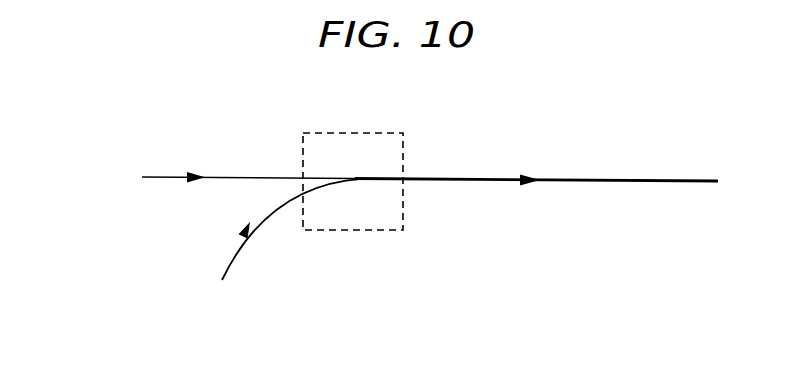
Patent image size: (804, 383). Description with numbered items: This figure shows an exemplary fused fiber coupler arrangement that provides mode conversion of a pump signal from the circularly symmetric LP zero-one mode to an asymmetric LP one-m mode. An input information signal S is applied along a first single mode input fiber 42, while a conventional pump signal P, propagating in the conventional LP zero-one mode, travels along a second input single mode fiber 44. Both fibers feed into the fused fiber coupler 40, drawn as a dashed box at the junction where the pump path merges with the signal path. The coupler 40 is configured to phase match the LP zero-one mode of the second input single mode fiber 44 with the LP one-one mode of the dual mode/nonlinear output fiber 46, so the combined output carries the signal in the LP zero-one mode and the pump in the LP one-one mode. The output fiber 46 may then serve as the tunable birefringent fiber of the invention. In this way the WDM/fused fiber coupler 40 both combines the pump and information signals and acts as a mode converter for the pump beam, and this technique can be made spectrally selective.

The fused fiber coupler 40 is at (337, 132).
The first single mode input fiber 42 is at (237, 175).
The second input single mode fiber 44 is at (228, 262).
The dual mode/nonlinear output fiber 46 is at (438, 179).